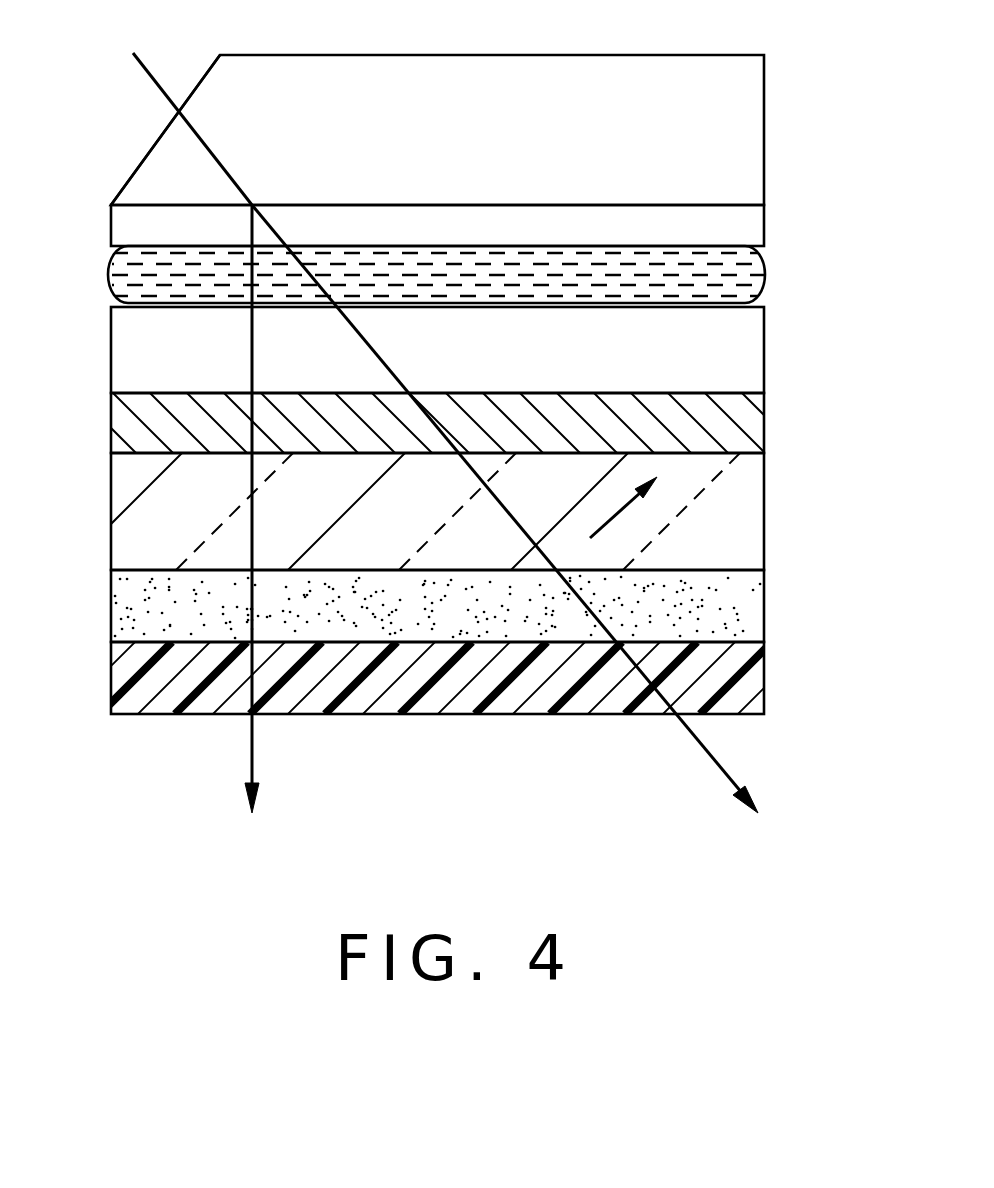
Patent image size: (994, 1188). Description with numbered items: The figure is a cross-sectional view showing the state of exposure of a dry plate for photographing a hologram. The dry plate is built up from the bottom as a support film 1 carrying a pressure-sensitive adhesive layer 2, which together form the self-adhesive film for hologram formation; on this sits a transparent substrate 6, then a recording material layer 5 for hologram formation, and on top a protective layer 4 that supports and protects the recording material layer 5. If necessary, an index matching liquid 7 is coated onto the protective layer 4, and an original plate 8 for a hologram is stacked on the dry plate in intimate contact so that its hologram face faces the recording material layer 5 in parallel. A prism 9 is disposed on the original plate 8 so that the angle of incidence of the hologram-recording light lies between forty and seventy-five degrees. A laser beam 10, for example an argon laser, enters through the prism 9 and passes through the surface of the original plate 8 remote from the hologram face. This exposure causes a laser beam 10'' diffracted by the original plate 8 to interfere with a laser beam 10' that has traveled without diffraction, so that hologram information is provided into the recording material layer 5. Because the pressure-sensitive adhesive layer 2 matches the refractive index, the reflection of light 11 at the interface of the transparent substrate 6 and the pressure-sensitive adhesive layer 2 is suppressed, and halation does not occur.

The support film 1 is at (755, 683).
The pressure-sensitive adhesive layer 2 is at (750, 613).
The protective layer 4 is at (750, 355).
The recording material layer for hologram formation 5 is at (750, 428).
The transparent substrate 6 is at (755, 511).
The index matching liquid 7 is at (768, 283).
The original plate for a hologram 8 is at (755, 226).
The prism 9 is at (755, 132).
The laser beam 10 is at (157, 129).
The laser beam traveled without diffraction 10' is at (505, 509).
The laser beam diffracted by the original plate 10'' is at (300, 509).
The reflection of light 11 is at (594, 539).